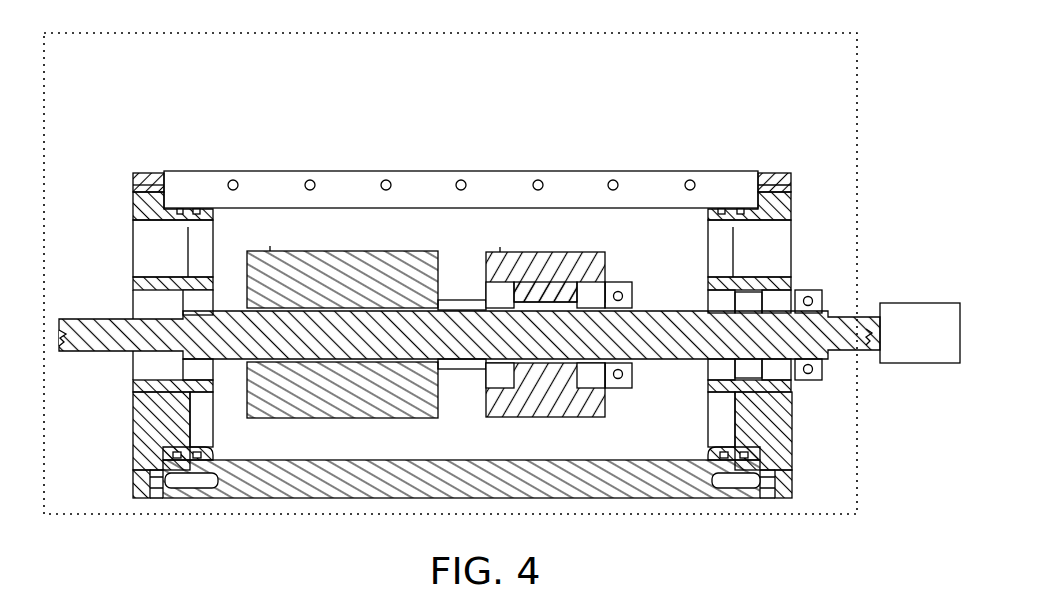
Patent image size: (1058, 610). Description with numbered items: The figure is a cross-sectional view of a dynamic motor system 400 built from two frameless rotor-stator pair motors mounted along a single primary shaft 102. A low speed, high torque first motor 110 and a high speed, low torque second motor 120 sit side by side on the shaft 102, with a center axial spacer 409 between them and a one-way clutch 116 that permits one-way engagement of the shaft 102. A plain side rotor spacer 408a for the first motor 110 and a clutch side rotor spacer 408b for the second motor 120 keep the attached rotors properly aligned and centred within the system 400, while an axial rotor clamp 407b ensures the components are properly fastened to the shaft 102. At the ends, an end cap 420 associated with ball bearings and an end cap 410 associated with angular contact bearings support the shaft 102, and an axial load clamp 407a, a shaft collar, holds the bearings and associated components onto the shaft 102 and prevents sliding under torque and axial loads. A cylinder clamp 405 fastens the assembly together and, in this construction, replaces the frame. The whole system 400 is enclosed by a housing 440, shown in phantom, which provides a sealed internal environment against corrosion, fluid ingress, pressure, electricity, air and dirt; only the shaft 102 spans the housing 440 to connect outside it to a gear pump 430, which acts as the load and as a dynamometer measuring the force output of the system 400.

The dynamic motor system 400 is at (232, 69).
The housing 440 is at (857, 155).
The end cap 420 is at (157, 149).
The end cap 410 is at (765, 159).
The cylinder clamp 405 is at (571, 171).
The shaft 102 is at (105, 318).
The second motor 120 is at (365, 148).
The first motor 110 is at (545, 146).
The clutch 116 is at (553, 300).
The center axial spacer 409 is at (468, 300).
The axial load clamp 407a is at (808, 290).
The axial rotor clamp 407b is at (608, 282).
The plain side rotor spacer 408a is at (270, 251).
The clutch side rotor spacer 408b is at (500, 252).
The gear pump 430 is at (920, 333).